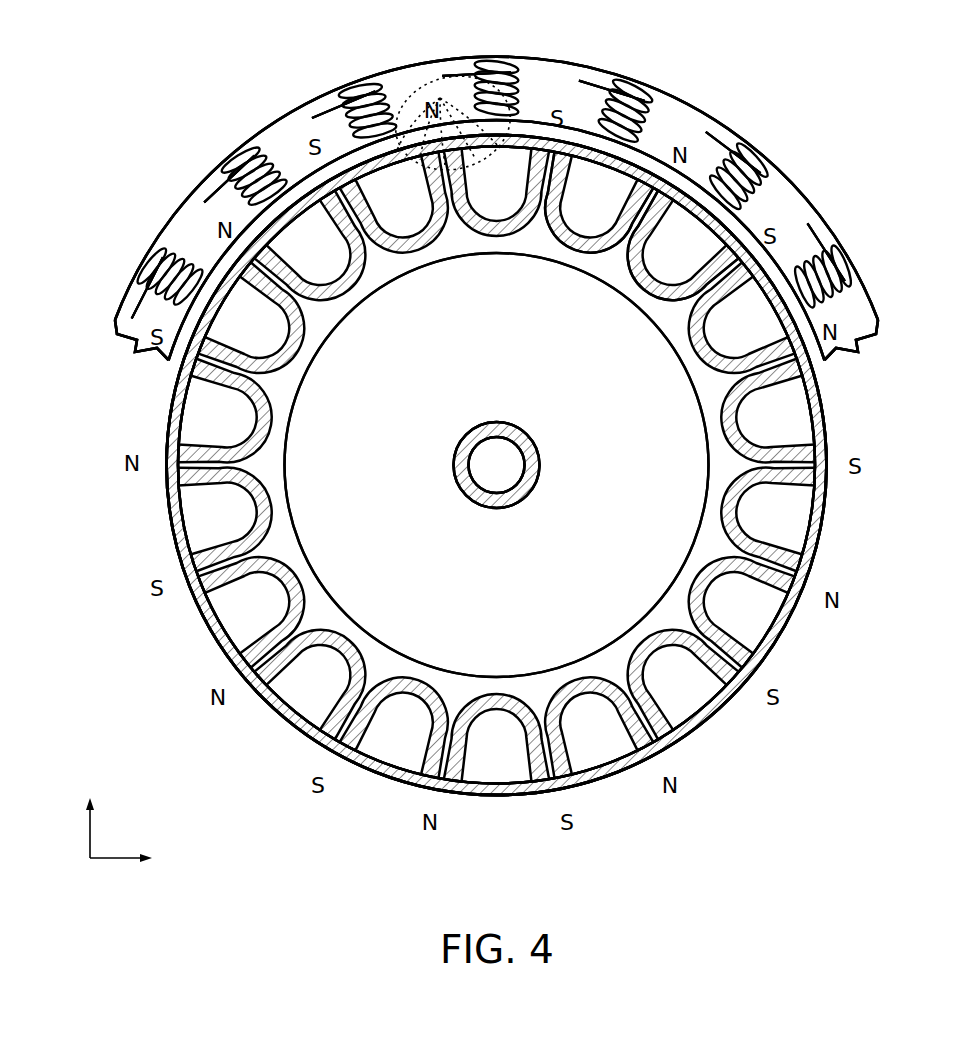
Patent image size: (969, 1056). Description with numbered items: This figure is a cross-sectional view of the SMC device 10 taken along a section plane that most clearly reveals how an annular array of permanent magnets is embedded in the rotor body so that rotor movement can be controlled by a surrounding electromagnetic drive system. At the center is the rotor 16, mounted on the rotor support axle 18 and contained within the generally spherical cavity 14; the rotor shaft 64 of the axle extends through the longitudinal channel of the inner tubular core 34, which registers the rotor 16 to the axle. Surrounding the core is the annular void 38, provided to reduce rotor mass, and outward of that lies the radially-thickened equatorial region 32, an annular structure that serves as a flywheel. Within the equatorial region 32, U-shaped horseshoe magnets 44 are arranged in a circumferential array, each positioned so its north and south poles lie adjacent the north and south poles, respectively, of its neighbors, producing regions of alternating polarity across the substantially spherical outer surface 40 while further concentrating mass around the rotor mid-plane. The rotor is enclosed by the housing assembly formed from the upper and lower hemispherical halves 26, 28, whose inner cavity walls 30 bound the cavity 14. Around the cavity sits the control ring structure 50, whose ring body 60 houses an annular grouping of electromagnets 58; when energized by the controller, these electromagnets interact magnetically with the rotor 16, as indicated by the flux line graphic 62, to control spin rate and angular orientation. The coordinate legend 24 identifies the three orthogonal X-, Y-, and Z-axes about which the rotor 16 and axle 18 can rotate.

The SMC device 10 is at (111, 429).
The generally spherical cavity 14 is at (307, 190).
The rotor 16 is at (826, 410).
The rotor support axle 18 is at (513, 447).
The coordinate legend 24 is at (99, 853).
The upper hemispherical half 26 is at (174, 248).
The lower hemispherical half 28 is at (625, 153).
The inner cavity walls 30 is at (706, 224).
The equatorial region 32 is at (352, 310).
The inner tubular core 34 is at (461, 444).
The annular void 38 is at (473, 399).
The outer surface 40 is at (174, 410).
The horseshoe magnets 44 is at (496, 237).
The control ring structure 50 is at (788, 190).
The electromagnets 58 is at (155, 277).
The ring body 60 is at (531, 95).
The flux line graphic 62 is at (388, 150).
The rotor shaft 64 is at (483, 482).